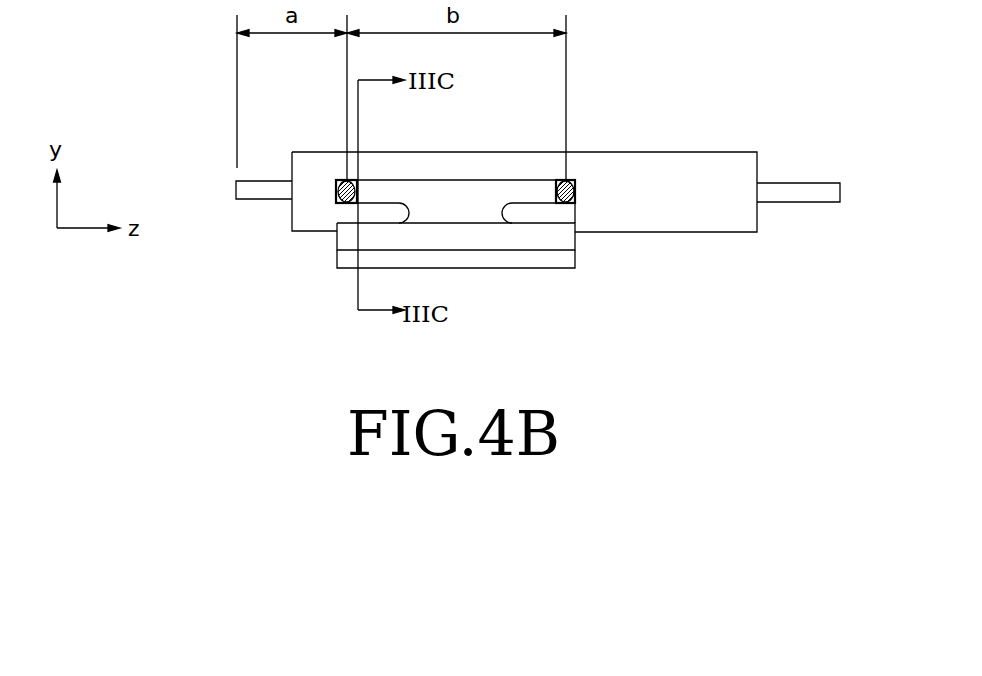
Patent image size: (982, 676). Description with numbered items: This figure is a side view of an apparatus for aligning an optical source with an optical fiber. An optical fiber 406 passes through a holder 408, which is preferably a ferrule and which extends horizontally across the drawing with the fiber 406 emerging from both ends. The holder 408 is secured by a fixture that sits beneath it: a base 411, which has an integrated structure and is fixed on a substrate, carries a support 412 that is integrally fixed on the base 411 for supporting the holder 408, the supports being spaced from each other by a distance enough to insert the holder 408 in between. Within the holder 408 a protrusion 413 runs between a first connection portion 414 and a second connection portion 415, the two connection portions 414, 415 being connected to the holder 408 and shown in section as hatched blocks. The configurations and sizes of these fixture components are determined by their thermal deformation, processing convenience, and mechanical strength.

The optical fiber 406 is at (807, 190).
The holder 408 is at (615, 223).
The base 411 is at (538, 262).
The support 412 is at (475, 245).
The protrusion 413 is at (532, 185).
The first connection portion 414 is at (342, 205).
The second connection portion 415 is at (569, 183).